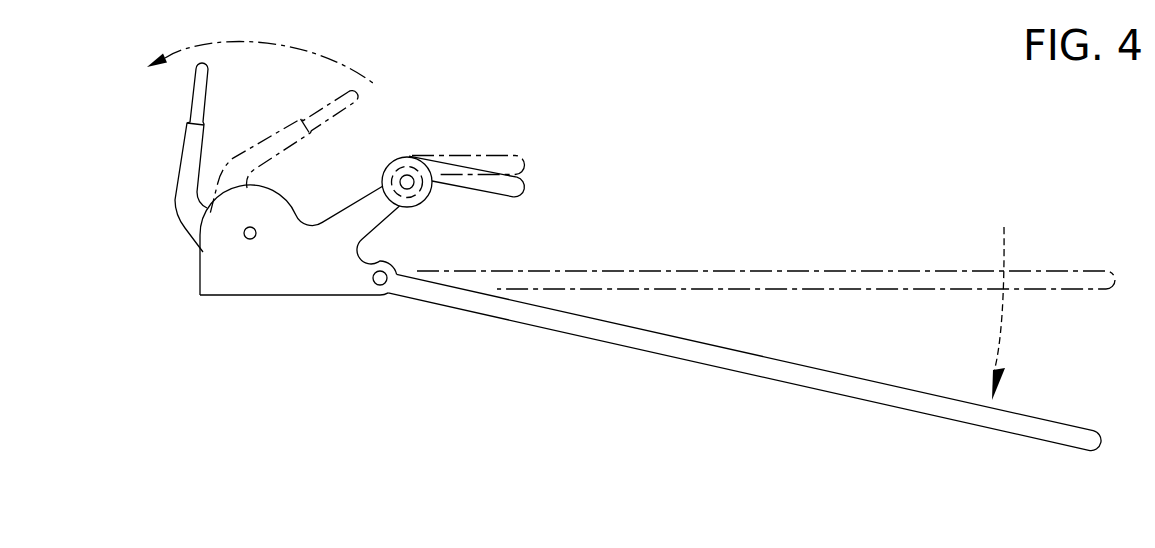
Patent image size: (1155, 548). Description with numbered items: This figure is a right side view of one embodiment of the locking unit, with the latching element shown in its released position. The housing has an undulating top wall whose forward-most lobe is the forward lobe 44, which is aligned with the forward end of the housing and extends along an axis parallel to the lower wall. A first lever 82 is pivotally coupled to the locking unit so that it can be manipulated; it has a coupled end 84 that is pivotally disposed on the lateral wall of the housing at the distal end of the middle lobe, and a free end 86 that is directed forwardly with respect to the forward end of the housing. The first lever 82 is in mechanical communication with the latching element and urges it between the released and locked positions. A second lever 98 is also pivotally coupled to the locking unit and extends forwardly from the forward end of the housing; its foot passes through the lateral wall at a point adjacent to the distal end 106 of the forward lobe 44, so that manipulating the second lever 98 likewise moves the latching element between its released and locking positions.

The forward lobe 44 is at (391, 246).
The first lever 82 is at (468, 167).
The coupled end 84 is at (394, 158).
The free end 86 is at (525, 193).
The second lever 98 is at (868, 381).
The distal end 106 is at (412, 292).